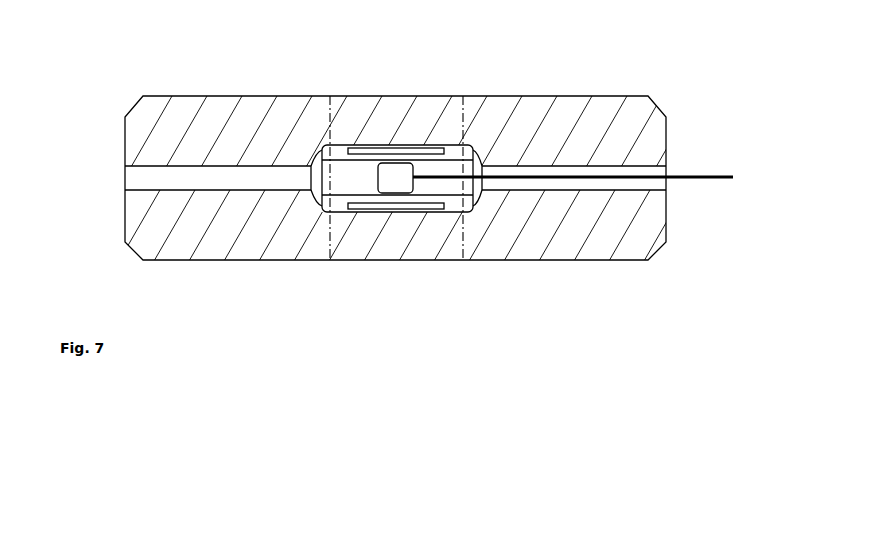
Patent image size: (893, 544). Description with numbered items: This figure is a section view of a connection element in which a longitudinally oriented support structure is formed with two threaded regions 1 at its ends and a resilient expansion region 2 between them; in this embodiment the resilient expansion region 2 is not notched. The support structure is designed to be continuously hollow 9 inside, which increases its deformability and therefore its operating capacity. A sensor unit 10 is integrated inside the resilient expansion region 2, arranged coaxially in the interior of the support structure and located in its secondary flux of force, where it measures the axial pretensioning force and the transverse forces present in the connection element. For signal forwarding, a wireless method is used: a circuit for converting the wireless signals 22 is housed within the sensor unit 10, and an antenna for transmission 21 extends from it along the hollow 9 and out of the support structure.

The threaded region 1 is at (205, 123).
The resilient expansion region 2 is at (432, 265).
The hollow interior 9 is at (132, 173).
The sensor unit 10 is at (371, 144).
The antenna for transmission 21 is at (542, 177).
The circuit for converting the wireless signals 22 is at (397, 185).